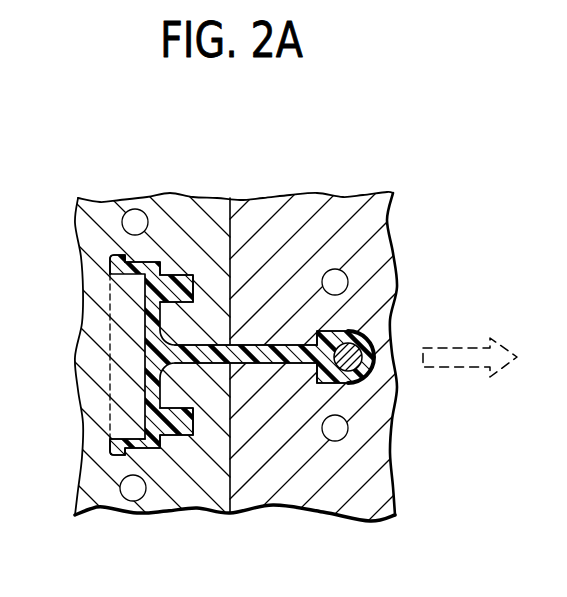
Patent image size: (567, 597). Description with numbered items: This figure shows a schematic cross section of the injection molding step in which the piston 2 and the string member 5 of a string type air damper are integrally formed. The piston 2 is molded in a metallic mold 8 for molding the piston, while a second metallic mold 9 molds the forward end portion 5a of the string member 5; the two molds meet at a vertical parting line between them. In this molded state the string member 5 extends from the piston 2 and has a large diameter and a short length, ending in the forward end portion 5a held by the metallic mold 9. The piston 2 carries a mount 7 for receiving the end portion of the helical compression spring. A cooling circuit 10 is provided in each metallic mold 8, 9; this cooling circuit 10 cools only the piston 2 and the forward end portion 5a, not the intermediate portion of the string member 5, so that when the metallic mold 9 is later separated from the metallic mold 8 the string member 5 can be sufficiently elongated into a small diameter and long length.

The piston 2 is at (110, 403).
The string member 5 is at (283, 362).
The forward end portion of the string member 5a is at (360, 333).
The mount 7 is at (176, 270).
The metallic mold for molding the piston 8 is at (103, 252).
The metallic mold for molding the forward end portion of the string member 9 is at (360, 222).
The cooling circuit 10 is at (134, 222).